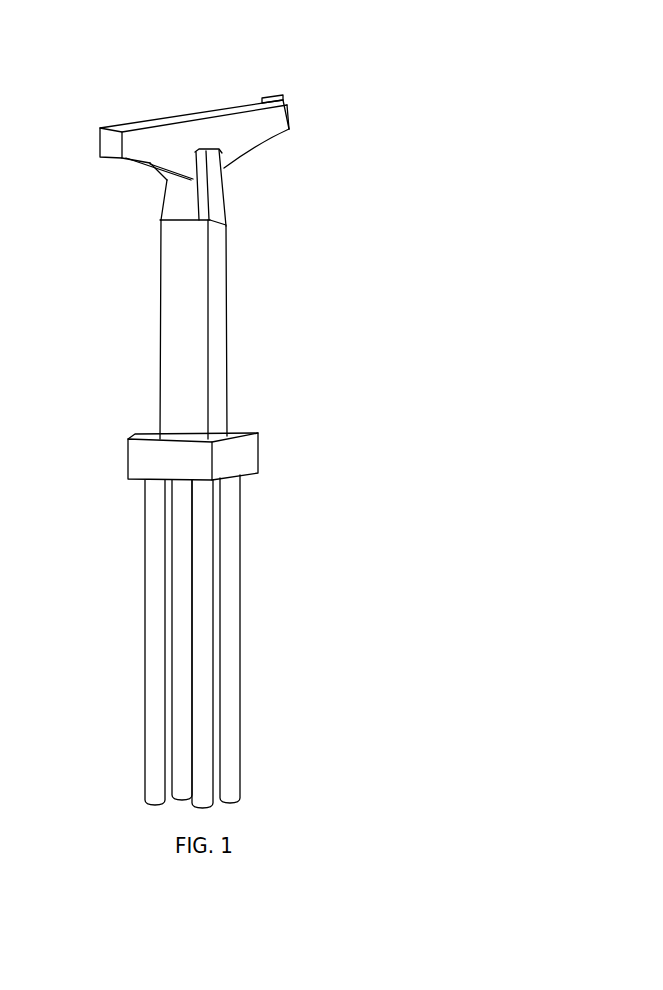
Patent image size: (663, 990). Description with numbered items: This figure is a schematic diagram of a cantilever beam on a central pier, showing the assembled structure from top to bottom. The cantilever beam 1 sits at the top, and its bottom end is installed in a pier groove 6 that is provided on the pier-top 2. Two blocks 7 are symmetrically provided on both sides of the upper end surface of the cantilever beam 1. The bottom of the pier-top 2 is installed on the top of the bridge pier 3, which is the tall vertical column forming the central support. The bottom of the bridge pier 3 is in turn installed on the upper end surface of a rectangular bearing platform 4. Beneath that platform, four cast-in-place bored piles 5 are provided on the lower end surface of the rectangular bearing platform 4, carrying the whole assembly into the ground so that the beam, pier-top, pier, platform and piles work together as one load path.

The cantilever beam 1 is at (225, 151).
The pier-top 2 is at (250, 203).
The bridge pier 3 is at (255, 329).
The rectangular bearing platform 4 is at (240, 473).
The cast-in-place bored piles 5 is at (248, 641).
The pier groove 6 is at (119, 189).
The blocks 7 is at (316, 59).